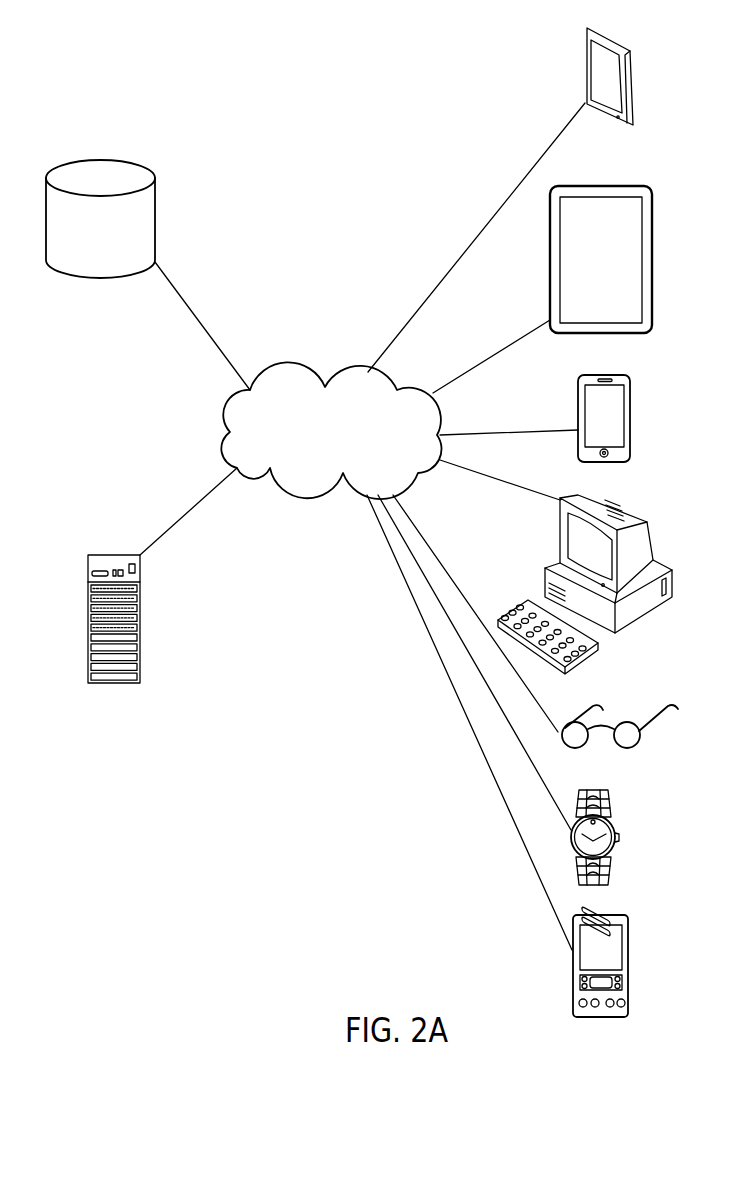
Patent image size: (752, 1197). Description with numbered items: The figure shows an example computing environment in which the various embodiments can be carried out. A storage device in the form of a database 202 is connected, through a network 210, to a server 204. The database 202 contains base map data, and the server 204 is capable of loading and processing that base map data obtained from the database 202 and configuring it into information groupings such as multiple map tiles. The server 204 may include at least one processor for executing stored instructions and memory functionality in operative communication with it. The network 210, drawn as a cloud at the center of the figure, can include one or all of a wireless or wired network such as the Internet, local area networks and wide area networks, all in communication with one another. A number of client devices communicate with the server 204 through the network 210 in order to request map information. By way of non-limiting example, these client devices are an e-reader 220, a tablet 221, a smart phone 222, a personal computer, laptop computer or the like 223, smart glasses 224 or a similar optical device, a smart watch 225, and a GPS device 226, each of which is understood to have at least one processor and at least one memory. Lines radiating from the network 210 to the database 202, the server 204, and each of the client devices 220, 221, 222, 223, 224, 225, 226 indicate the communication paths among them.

The database 202 is at (155, 178).
The server 204 is at (140, 580).
The network 210 is at (300, 488).
The e-reader 220 is at (631, 52).
The tablet 221 is at (652, 210).
The smart phone 222 is at (630, 382).
The personal computer 223 is at (672, 570).
The smart glasses 224 is at (638, 740).
The smart watch 225 is at (620, 840).
The GPS device 226 is at (628, 925).